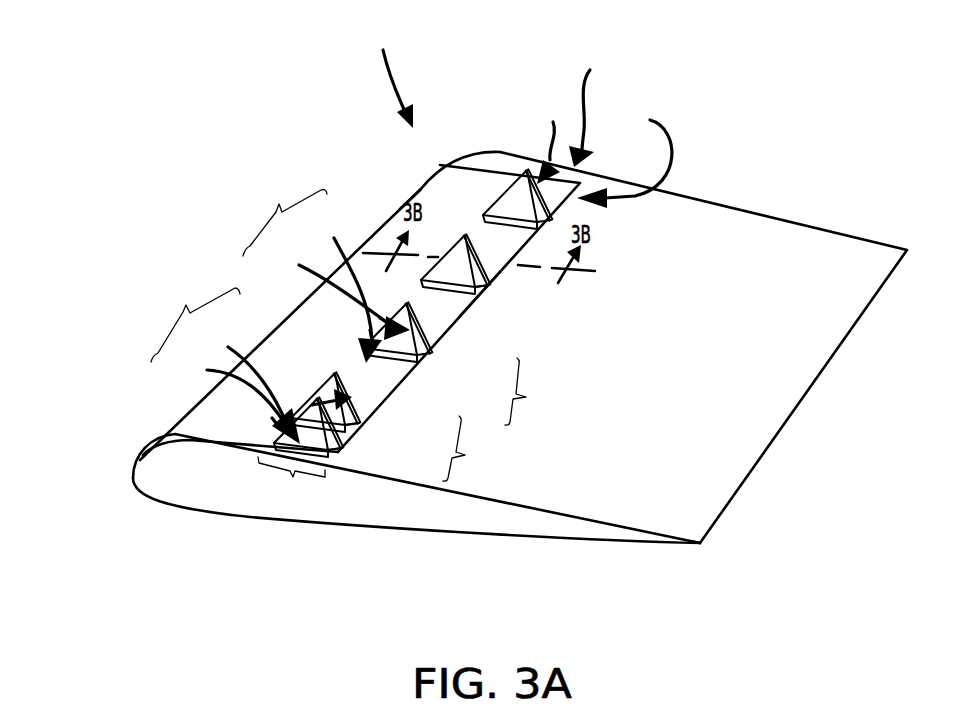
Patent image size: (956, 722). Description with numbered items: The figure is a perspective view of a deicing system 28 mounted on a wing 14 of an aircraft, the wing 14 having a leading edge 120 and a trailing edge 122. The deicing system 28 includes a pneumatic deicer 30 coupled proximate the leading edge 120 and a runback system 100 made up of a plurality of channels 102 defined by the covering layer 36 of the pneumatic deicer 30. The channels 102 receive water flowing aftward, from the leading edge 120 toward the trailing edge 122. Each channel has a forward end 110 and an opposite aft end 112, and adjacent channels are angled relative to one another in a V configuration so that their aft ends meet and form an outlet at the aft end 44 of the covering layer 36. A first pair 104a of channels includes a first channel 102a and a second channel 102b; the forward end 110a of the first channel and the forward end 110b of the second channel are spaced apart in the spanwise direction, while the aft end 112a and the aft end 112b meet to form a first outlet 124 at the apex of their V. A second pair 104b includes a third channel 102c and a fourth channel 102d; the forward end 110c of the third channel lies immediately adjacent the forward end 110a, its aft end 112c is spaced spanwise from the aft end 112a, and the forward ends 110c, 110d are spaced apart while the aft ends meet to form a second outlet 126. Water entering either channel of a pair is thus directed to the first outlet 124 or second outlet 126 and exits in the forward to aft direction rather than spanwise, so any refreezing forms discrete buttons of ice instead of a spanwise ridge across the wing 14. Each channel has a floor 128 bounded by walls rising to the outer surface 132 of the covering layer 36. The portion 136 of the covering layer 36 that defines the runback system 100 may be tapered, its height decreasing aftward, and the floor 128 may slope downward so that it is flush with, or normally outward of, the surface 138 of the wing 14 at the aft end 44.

The wing 14 is at (742, 216).
The deicing system 28 is at (388, 75).
The pneumatic deicer 30 is at (420, 187).
The covering layer 36 is at (443, 210).
The aft end of covering layer 44 is at (624, 153).
The runback system 100 is at (587, 103).
The channels 102 is at (524, 161).
The first channel 102a is at (282, 372).
The second channel 102b is at (257, 399).
The third channel 102c is at (342, 304).
The fourth channel 102d is at (395, 287).
The first pair of channels 104a is at (195, 317).
The second pair of channels 104b is at (285, 213).
The forward end 110 is at (530, 171).
The forward end of first channel 110a is at (340, 384).
The forward end of second channel 110b is at (278, 427).
The forward end of third channel 110c is at (366, 352).
The forward end of fourth channel 110d is at (396, 324).
The aft end 112 is at (487, 290).
The aft end of first channel 112a is at (366, 426).
The aft end of second channel 112b is at (346, 450).
The aft end of third channel 112c is at (417, 382).
The leading edge 120 is at (132, 477).
The trailing edge 122 is at (707, 540).
The first outlet 124 is at (474, 448).
The second outlet 126 is at (533, 391).
The floor 128 is at (500, 228).
The outer surface 132 is at (483, 256).
The portion of covering layer 136 is at (291, 481).
The surface of wing 138 is at (620, 348).